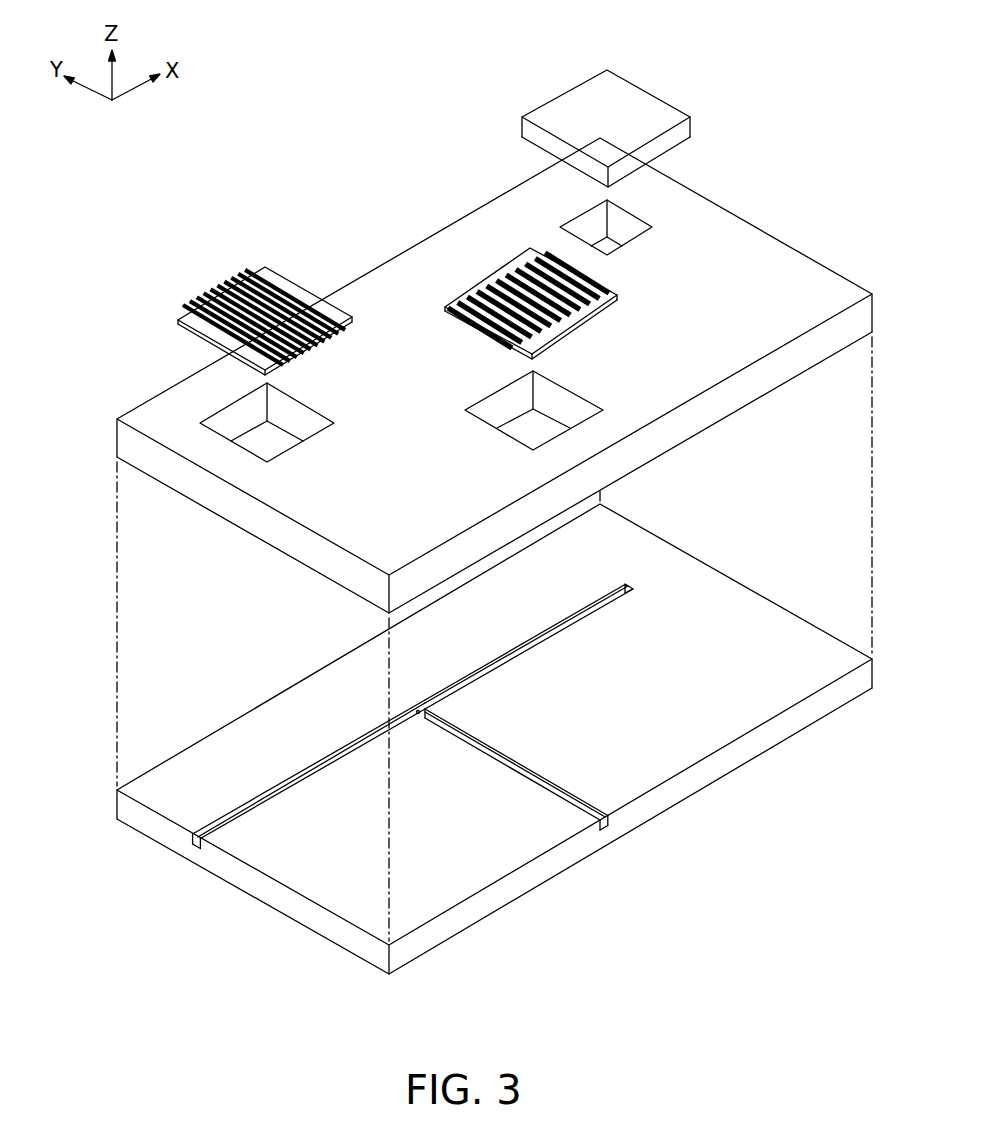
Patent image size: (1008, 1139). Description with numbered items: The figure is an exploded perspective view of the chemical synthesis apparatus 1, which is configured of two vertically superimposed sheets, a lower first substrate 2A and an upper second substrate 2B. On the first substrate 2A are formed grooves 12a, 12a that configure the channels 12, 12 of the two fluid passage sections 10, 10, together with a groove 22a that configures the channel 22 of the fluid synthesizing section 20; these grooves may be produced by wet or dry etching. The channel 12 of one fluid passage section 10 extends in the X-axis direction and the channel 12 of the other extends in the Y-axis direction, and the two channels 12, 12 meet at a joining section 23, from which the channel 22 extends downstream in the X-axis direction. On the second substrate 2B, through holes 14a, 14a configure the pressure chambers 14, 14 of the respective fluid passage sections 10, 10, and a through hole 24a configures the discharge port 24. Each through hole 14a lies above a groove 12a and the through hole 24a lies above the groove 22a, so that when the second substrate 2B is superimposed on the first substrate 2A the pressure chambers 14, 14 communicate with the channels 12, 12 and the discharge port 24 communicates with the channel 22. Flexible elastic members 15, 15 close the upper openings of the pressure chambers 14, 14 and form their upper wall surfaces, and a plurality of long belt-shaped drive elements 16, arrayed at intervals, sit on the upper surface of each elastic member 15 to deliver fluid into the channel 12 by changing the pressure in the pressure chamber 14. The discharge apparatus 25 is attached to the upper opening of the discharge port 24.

The chemical synthesis apparatus 1 is at (770, 60).
The first substrate 2A is at (758, 596).
The second substrate 2B is at (755, 226).
The fluid passage section 10 is at (268, 229).
The channel 12 is at (285, 790).
The groove 12a is at (313, 767).
The pressure chamber 14 is at (283, 392).
The through hole 14a is at (307, 420).
The elastic member 15 is at (343, 312).
The drive element 16 is at (391, 308).
The fluid synthesizing section 20 is at (619, 60).
The channel 22 is at (522, 655).
The groove 22a is at (548, 630).
The joining section 23 is at (415, 713).
The discharge port 24 is at (618, 206).
The through hole 24a is at (634, 230).
The discharge apparatus 25 is at (670, 101).